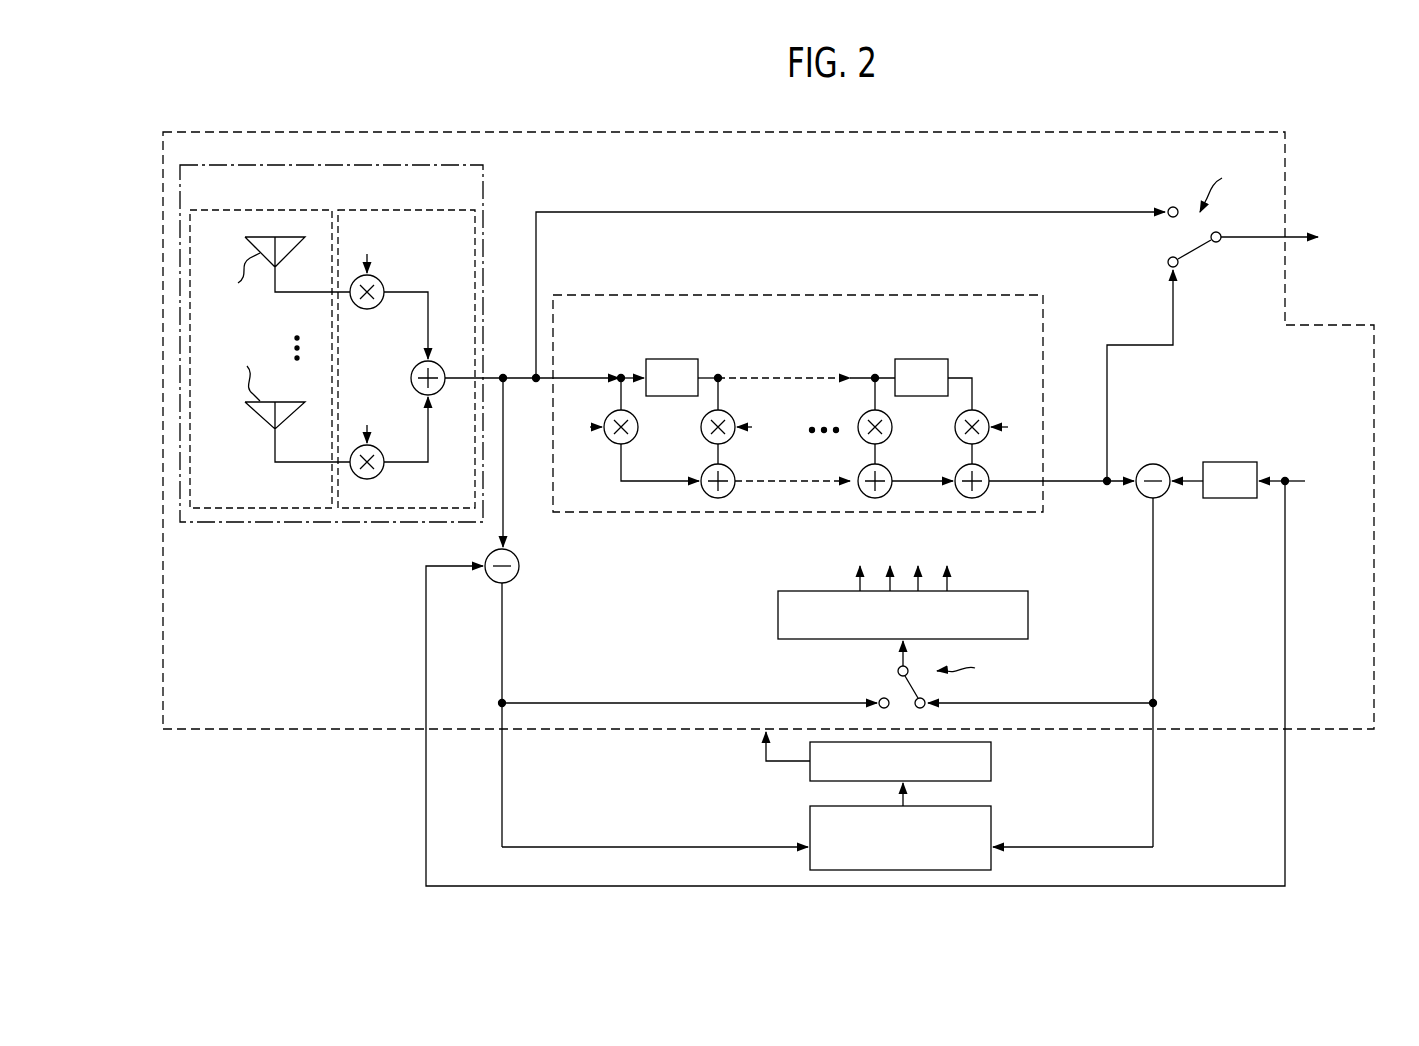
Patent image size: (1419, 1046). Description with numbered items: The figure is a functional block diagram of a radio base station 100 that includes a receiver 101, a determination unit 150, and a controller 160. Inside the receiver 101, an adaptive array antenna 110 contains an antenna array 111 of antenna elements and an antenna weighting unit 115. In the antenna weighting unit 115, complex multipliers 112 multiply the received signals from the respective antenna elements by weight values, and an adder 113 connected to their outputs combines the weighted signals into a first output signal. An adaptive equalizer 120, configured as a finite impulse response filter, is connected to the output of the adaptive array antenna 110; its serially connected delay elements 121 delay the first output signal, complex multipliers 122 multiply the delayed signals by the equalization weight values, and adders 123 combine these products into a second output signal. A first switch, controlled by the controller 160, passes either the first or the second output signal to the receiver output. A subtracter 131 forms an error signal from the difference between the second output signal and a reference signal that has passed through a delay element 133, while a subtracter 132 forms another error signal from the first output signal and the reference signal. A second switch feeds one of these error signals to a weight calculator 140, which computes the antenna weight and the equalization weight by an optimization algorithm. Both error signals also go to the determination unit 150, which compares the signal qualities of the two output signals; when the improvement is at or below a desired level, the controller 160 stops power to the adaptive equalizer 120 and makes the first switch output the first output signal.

The radio base station 100 is at (1312, 135).
The receiver 101 is at (1287, 184).
The adaptive array antenna 110 is at (323, 522).
The antenna array 111 is at (232, 208).
The complex multipliers 112 is at (384, 278).
The adder 113 is at (415, 368).
The antenna weighting unit 115 is at (378, 208).
The adaptive equalizer 120 is at (770, 295).
The delay elements 121 is at (675, 359).
The complex multipliers 122 is at (610, 444).
The adders 123 is at (735, 470).
The subtracter 131 is at (1151, 463).
The subtracter 132 is at (520, 566).
The delay element 133 is at (1227, 462).
The weight calculator 140 is at (1030, 616).
The determination unit 150 is at (993, 822).
The controller 160 is at (993, 762).